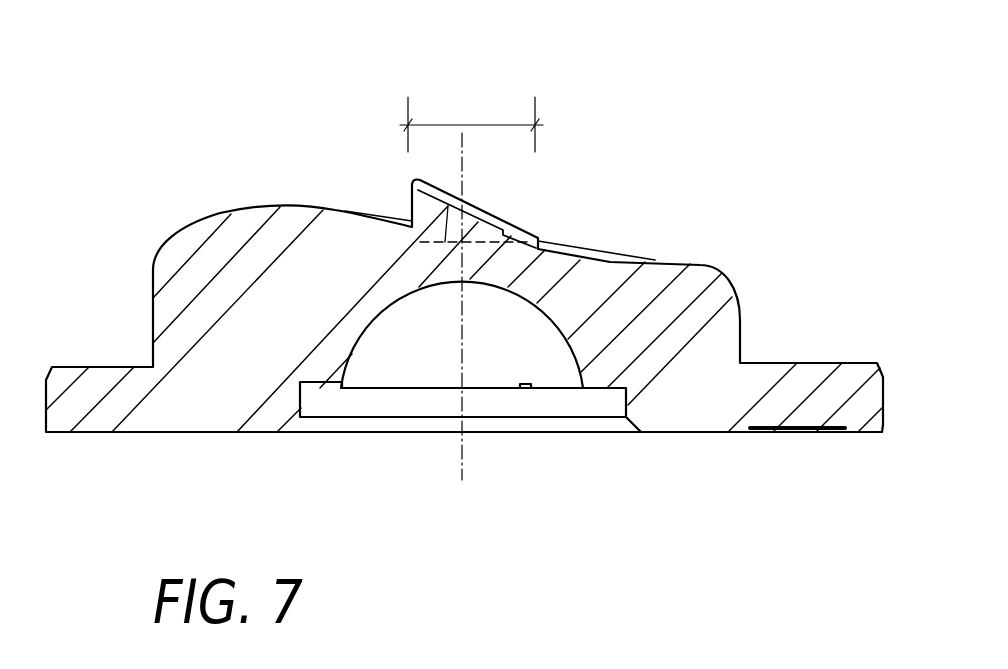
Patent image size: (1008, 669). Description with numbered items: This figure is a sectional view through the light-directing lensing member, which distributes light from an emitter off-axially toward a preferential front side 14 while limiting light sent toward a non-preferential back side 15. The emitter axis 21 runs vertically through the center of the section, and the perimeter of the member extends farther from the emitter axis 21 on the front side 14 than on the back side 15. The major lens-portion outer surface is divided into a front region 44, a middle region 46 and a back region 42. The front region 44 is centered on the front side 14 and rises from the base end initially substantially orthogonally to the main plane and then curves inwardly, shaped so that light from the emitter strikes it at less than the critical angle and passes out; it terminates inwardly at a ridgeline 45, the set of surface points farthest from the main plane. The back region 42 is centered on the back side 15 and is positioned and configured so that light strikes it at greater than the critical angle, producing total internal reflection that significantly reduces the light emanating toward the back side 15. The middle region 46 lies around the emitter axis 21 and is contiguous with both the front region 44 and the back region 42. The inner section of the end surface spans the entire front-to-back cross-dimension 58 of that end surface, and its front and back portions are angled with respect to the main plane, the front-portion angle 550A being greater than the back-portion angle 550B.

The preferential front side 14 is at (58, 335).
The non-preferential back side 15 is at (858, 313).
The emitter axis 21 is at (462, 330).
The back region 42 is at (732, 288).
The front region 44 is at (153, 297).
The ridgeline 45 is at (297, 207).
The middle region 46 is at (386, 213).
The front-to-back cross-dimension 58 is at (457, 125).
The angle of front portion 550A is at (407, 211).
The angle of back portion 550B is at (545, 247).